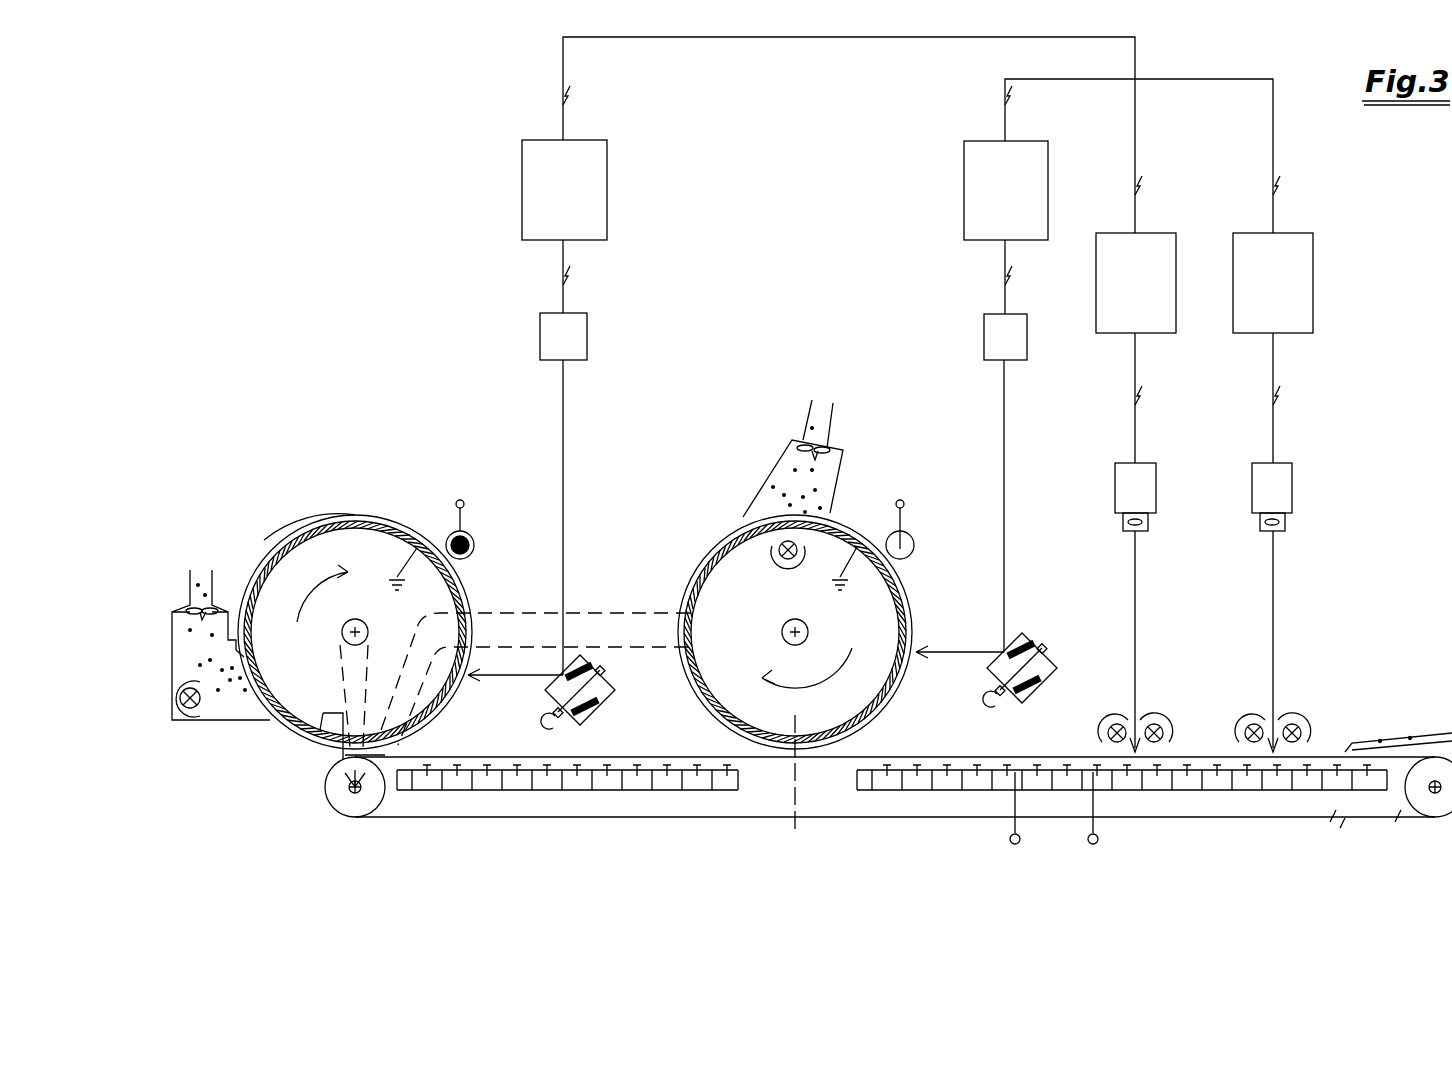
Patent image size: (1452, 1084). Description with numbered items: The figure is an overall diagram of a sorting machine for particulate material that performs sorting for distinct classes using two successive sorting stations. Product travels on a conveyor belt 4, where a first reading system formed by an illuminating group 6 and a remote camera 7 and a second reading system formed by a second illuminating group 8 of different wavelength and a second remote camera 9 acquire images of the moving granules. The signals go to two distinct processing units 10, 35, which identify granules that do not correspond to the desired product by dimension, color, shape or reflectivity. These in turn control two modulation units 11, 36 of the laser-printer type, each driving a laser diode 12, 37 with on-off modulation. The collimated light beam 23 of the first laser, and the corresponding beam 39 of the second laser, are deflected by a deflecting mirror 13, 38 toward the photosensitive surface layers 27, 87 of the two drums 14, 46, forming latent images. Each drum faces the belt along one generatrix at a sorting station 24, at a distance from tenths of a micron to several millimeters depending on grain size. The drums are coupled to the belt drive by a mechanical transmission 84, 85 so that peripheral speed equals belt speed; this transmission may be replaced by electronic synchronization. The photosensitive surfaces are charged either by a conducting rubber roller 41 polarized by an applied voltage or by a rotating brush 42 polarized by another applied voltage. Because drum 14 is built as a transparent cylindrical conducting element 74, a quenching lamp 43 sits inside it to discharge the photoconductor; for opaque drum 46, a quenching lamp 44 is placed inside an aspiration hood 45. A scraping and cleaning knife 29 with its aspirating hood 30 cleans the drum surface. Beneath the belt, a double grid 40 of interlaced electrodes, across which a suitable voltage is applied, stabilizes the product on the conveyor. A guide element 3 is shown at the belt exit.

The guide plate 3 is at (1445, 740).
The conveyor belt 4 is at (1147, 817).
The illuminating group 6 is at (1262, 718).
The remote camera 7 is at (1292, 485).
The second illuminating group 8 is at (1125, 718).
The second remote camera 9 is at (1156, 485).
The processing unit 10 is at (1313, 300).
The electronic modulation logic unit 11 is at (1048, 212).
The laser diode 12 is at (1027, 338).
The rotating mirror 13 is at (1050, 680).
The drum 14 is at (348, 550).
The light beam 23 is at (1007, 455).
The sorting station 24 is at (856, 752).
The photoconducting layer 27 is at (292, 532).
The scraping and cleaning knife 29 is at (240, 640).
The aspirating hood 30 is at (826, 448).
The processing unit 35 is at (1176, 300).
The modulation unit 36 is at (607, 210).
The laser diode 37 is at (587, 337).
The deflecting mirror 38 is at (612, 705).
The conductor 39 is at (565, 455).
The double grid of interlaced electrodes 40 is at (717, 782).
The conducting rubber roller 41 is at (914, 548).
The rotating brush 42 is at (474, 545).
The quenching lamp 43 is at (776, 563).
The quenching lamp 44 is at (180, 695).
The aspiration hood 45 is at (185, 609).
The drum 46 is at (716, 602).
The cylindrical conducting element 74 is at (895, 668).
The mechanical transmission 84 is at (307, 732).
The mechanical transmission 85 is at (519, 613).
The photosensitive surface layer 87 is at (728, 528).